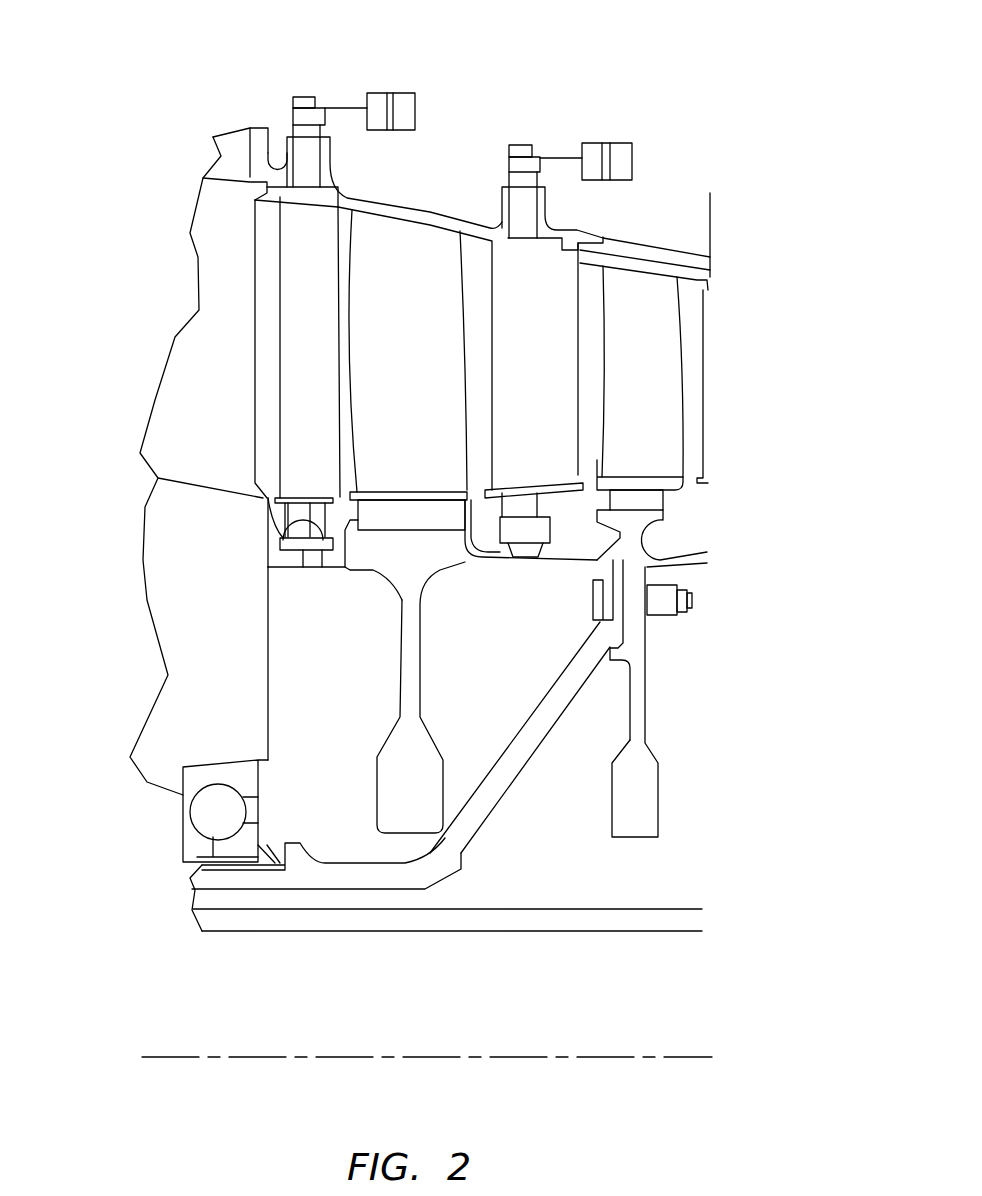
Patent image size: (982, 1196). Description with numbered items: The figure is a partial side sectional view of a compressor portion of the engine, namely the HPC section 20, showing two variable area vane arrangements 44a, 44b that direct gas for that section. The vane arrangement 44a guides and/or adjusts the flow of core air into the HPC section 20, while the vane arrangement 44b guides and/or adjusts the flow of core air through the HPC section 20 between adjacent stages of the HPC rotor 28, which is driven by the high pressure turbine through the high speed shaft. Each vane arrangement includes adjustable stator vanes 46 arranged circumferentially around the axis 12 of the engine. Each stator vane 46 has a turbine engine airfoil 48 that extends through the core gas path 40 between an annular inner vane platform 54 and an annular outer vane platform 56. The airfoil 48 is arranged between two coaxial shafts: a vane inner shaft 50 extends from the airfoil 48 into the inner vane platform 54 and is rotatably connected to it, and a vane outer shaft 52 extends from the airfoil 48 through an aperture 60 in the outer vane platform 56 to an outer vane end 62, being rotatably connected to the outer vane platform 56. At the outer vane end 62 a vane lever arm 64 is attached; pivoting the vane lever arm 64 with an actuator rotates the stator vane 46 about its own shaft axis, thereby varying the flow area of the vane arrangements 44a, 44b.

The axis 12 is at (693, 1057).
The HPC section 20 is at (115, 80).
The HPC rotor 28 is at (647, 650).
The core gas path 40 is at (193, 375).
The vane arrangement 44a is at (434, 99).
The vane arrangement 44b is at (532, 140).
The adjustable stator vane 46 is at (448, 382).
The turbine engine airfoil 48 is at (309, 350).
The vane inner shaft 50 is at (280, 540).
The vane outer shaft 52 is at (323, 168).
The annular inner vane platform 54 is at (267, 498).
The annular outer vane platform 56 is at (215, 182).
The aperture 60 is at (277, 165).
The outer vane end 62 is at (306, 95).
The vane lever arm 64 is at (325, 108).